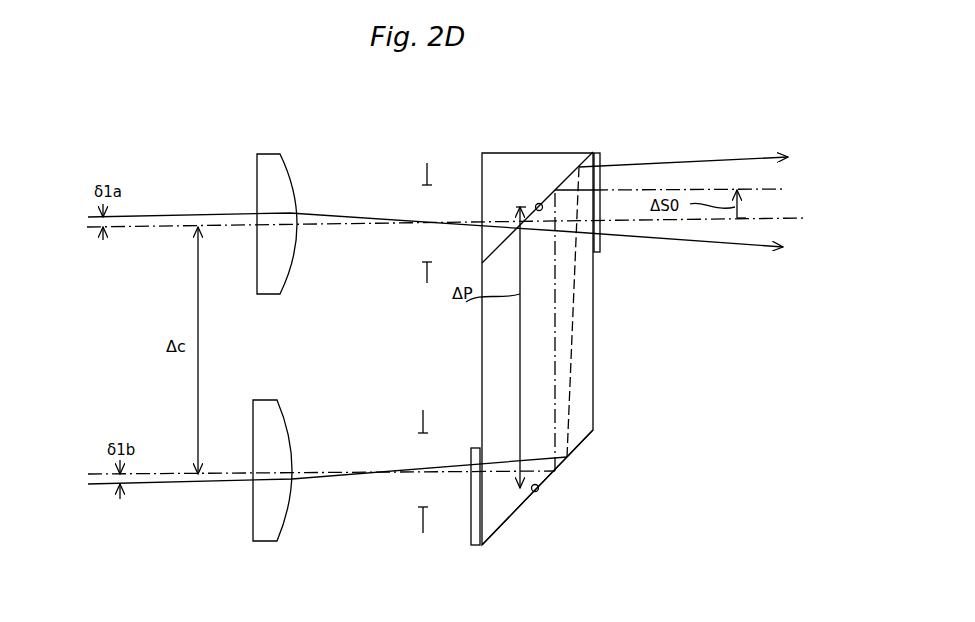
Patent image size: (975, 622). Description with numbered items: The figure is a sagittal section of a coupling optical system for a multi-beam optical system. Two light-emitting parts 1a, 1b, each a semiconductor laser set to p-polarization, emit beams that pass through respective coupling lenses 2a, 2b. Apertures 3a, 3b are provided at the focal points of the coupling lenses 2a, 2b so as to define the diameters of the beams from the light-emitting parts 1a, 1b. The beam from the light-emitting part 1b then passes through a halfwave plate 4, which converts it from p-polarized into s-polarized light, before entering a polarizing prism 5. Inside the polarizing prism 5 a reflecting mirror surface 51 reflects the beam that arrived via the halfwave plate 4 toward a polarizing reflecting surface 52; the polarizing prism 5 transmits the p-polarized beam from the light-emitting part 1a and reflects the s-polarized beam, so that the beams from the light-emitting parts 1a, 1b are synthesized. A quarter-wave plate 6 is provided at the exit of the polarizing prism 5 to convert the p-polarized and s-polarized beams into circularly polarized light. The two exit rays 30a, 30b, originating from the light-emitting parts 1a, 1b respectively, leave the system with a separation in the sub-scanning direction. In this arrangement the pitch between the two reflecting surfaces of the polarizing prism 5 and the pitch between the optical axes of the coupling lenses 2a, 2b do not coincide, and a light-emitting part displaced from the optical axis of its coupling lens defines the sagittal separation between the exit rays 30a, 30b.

The light-emitting part 1a is at (152, 216).
The light-emitting part 1b is at (144, 486).
The coupling lens 2a is at (277, 208).
The coupling lens 2b is at (272, 483).
The aperture 3a is at (429, 211).
The aperture 3b is at (422, 488).
The halfwave plate 4 is at (467, 540).
The polarizing prism 5 is at (520, 162).
The reflecting mirror surface 51 is at (582, 448).
The polarizing reflecting surface 52 is at (572, 172).
The quarter-wave plate 6 is at (600, 162).
The exit ray 30a is at (746, 250).
The exit ray 30b is at (714, 158).